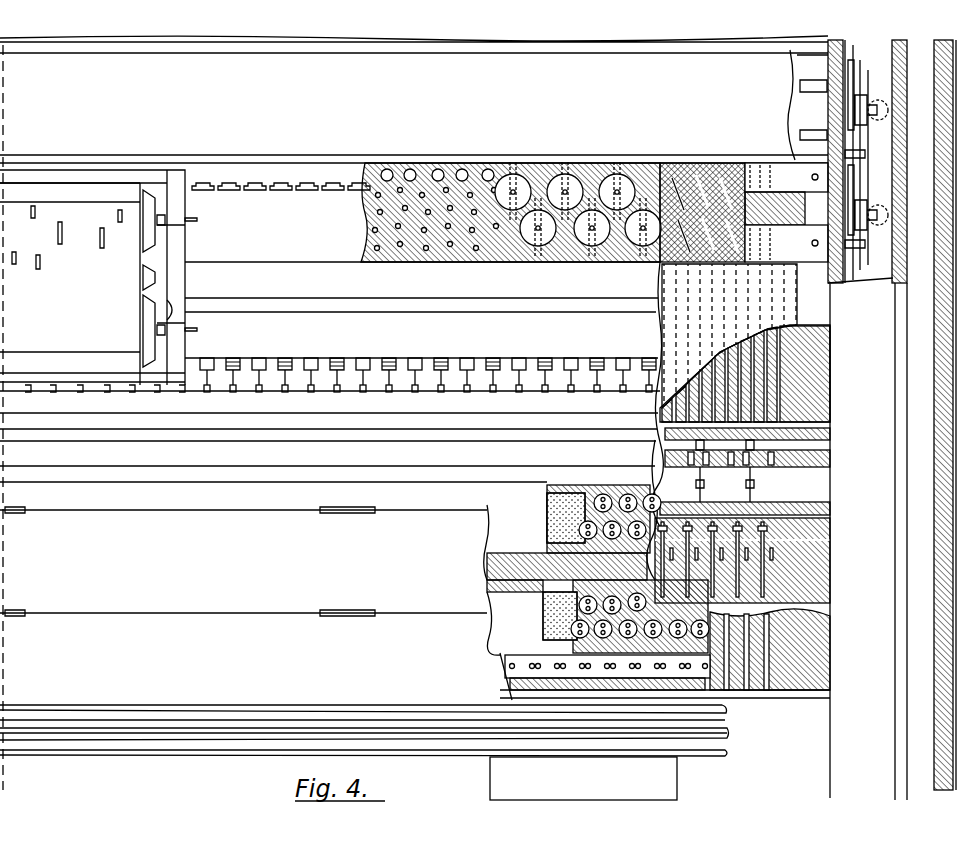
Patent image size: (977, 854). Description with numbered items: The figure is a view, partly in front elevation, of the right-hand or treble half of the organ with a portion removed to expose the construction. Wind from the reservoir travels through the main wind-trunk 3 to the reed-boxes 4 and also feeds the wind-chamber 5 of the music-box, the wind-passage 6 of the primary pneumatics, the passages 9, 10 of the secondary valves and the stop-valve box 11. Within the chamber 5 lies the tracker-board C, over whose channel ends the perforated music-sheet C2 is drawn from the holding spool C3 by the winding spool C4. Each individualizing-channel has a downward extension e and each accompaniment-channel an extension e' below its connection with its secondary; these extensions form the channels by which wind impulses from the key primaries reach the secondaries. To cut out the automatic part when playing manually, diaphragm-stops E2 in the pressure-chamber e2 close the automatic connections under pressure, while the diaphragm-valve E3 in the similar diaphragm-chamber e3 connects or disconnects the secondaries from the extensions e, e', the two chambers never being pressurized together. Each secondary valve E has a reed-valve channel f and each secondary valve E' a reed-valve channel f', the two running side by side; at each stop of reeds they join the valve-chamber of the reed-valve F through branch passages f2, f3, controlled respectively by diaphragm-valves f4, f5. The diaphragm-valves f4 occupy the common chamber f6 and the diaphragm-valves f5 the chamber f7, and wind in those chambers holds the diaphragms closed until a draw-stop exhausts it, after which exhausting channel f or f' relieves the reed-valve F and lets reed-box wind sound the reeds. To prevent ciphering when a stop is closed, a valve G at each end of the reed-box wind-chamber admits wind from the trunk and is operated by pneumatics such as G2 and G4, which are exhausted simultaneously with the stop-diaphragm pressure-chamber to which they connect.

The reed-boxes 4 is at (414, 136).
The wind-chamber of the music-box 5 is at (68, 196).
The wind-passage of the primary pneumatics 6 is at (331, 394).
The stop-valve box 11 is at (583, 778).
The tracker-board C is at (152, 273).
The perforated music-sheet C2 is at (143, 295).
The holding spool C3 is at (150, 220).
The winding spool C4 is at (145, 346).
The reed-valve F is at (553, 190).
The diaphragm-valve f5 is at (666, 175).
The branch passage f3 is at (669, 208).
The branch passage f2 is at (664, 222).
The diaphragm-valve chamber f7 is at (788, 170).
The diaphragm-valve chamber f6 is at (790, 247).
The diaphragm-valve f4 is at (660, 250).
The reed-valve channel f is at (767, 464).
The reed-valve channel f' is at (769, 440).
The passage of the secondary valves 9 is at (770, 445).
The secondary valve E' is at (775, 453).
The main wind-trunk 3 is at (865, 501).
The passage of the secondary valves 10 is at (760, 543).
The downward extension of individualizing-channel e is at (686, 697).
The downward extension of accompaniment-channel e' is at (760, 725).
The diaphragm-stops E2 is at (608, 500).
The pressure-chamber e2 is at (521, 519).
The diaphragm-valve E3 is at (585, 592).
The diaphragm-chamber e3 is at (519, 627).
The valve G is at (852, 97).
The pneumatic G2 is at (860, 178).
The pneumatic G4 is at (840, 231).